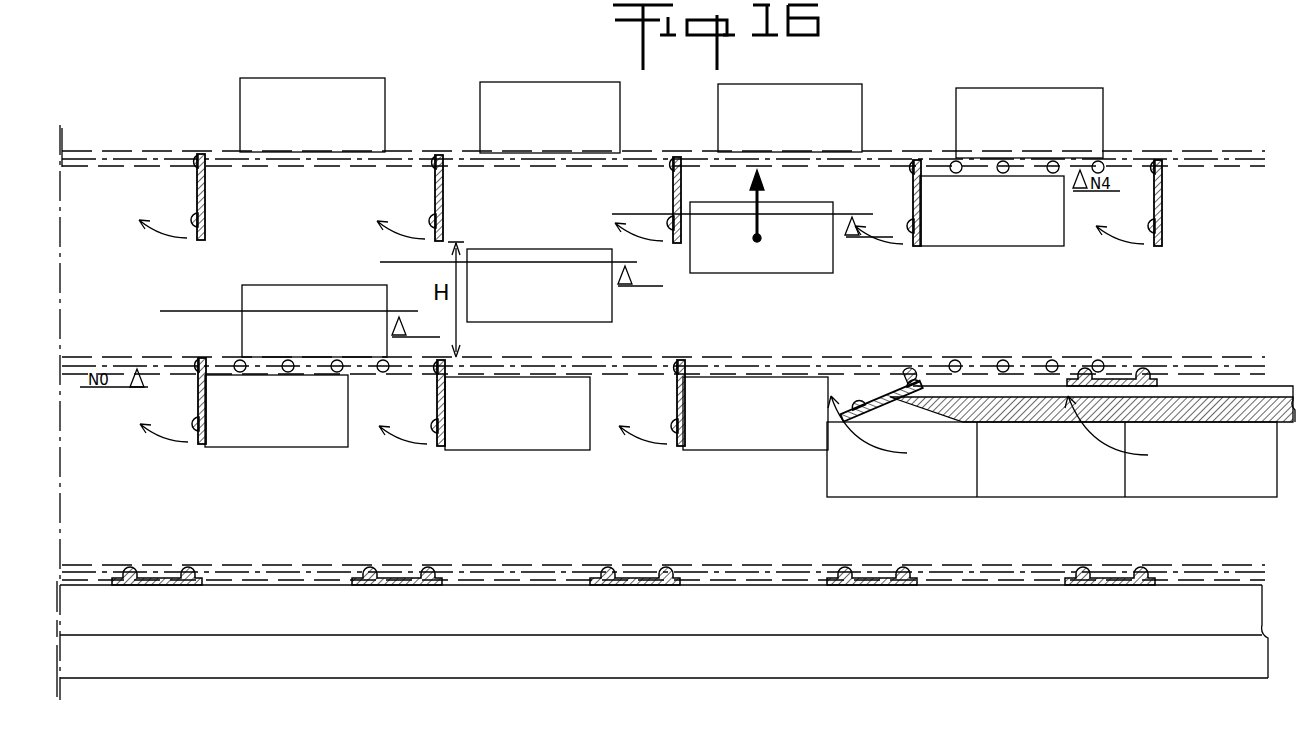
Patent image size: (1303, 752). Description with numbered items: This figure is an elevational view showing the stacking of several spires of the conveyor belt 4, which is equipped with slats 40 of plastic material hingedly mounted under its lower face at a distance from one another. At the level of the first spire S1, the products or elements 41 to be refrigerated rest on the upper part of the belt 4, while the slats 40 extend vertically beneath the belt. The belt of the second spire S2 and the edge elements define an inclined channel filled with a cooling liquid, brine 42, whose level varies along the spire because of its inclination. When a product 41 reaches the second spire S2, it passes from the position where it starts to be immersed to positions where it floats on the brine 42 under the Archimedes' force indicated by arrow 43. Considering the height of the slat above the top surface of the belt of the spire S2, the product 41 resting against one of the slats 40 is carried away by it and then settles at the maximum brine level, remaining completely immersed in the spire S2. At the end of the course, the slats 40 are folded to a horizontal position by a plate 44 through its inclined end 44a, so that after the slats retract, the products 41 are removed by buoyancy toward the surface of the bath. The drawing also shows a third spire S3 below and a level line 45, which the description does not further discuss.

The conveyor belt 4 is at (869, 172).
The slat 40 is at (197, 188).
The product 41 is at (830, 103).
The brine 42 is at (418, 291).
The arrow 43 is at (777, 206).
The plate 44 is at (1252, 410).
The inclined end 44a is at (907, 368).
The level line 45 is at (640, 223).
The first spire S1 is at (1186, 160).
The second spire S2 is at (1180, 368).
The third station S3 is at (1178, 580).